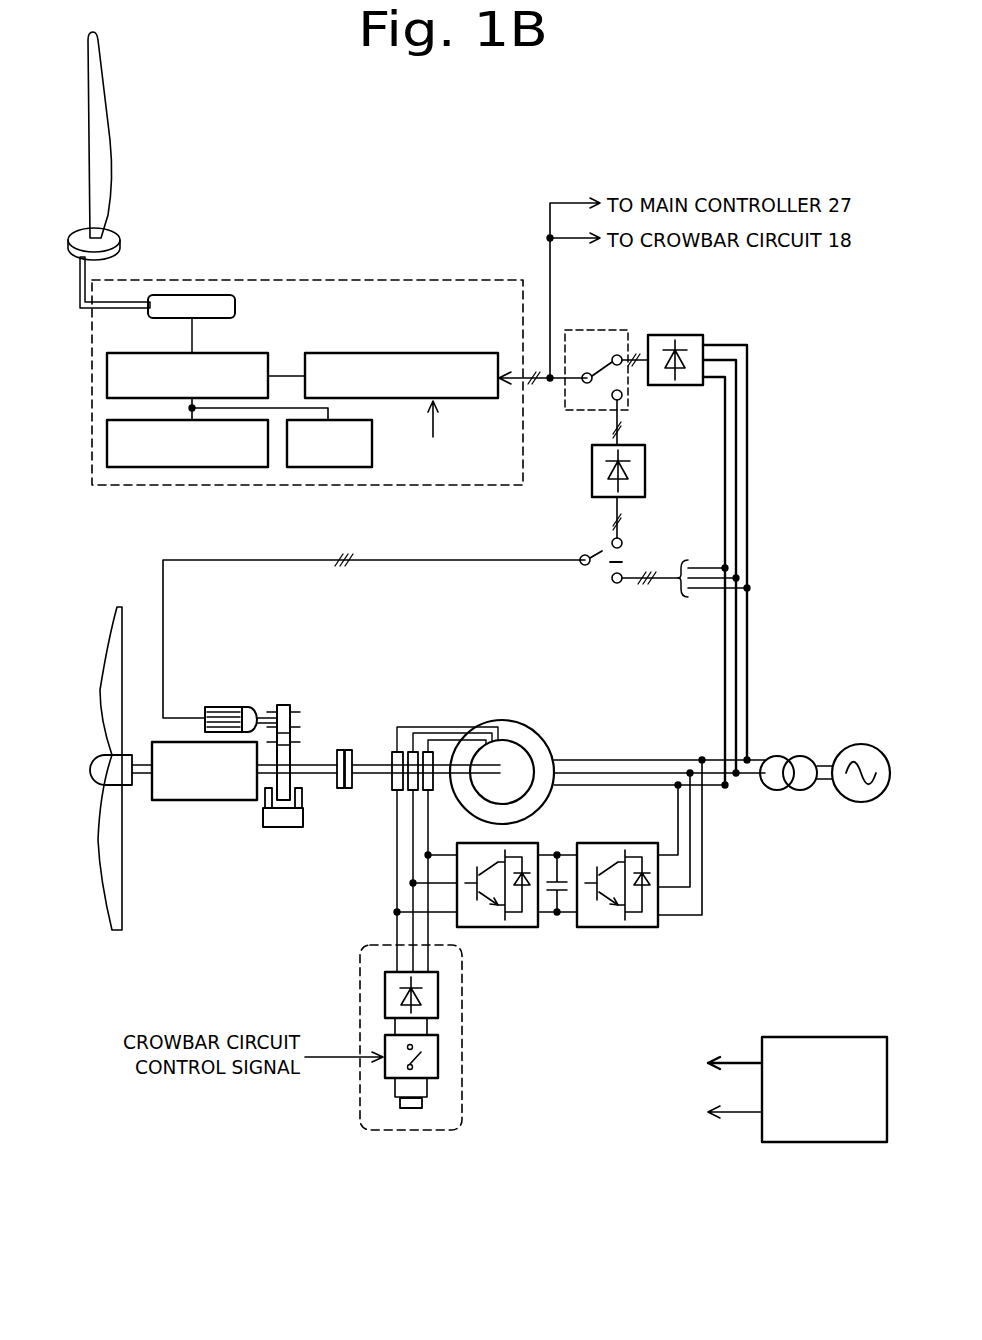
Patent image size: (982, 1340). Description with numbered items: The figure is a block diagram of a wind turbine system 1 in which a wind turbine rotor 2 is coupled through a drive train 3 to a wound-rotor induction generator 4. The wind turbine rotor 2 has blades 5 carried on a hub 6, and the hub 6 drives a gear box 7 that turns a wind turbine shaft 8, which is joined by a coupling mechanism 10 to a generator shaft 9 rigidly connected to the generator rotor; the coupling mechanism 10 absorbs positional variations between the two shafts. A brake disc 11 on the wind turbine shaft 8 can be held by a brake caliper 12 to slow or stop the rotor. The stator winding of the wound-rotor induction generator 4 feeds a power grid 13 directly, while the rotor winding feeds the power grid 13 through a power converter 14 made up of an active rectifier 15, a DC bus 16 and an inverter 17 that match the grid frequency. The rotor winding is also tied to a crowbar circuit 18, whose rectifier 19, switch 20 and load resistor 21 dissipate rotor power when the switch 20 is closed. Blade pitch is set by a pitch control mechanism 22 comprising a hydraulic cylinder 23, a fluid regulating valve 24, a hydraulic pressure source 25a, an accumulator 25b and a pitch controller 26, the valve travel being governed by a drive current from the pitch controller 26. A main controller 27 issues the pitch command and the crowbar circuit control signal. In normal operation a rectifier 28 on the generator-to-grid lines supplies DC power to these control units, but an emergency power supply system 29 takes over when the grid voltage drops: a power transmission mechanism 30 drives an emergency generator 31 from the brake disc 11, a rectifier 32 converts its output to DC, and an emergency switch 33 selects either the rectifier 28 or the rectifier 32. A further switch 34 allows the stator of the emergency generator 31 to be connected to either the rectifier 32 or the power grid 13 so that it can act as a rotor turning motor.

The wind turbine system 1 is at (501, 160).
The wind turbine rotor 2 is at (100, 923).
The drive train 3 is at (198, 878).
The wound-rotor induction generator 4 is at (507, 720).
The blades 5 is at (102, 123).
The hub 6 is at (88, 775).
The gear box 7 is at (193, 800).
The wind turbine shaft 8 is at (312, 777).
The generator shaft 9 is at (370, 777).
The coupling mechanism 10 is at (342, 750).
The brake disc 11 is at (291, 755).
The brake caliper 12 is at (282, 830).
The power grid 13 is at (858, 803).
The power converter 14 is at (604, 950).
The active rectifier 15 is at (491, 927).
The DC bus 16 is at (557, 855).
The inverter 17 is at (617, 927).
The crowbar circuit 18 is at (360, 1088).
The rectifier 19 is at (438, 995).
The switch 20 is at (438, 1058).
The load resistor 21 is at (412, 1110).
The pitch control mechanism 22 is at (327, 278).
The hydraulic cylinder 23 is at (180, 293).
The fluid regulating valve 24 is at (248, 353).
The hydraulic pressure source 25a is at (318, 467).
The accumulator 25b is at (137, 468).
The pitch controller 26 is at (425, 353).
The main controller 27 is at (825, 1037).
The rectifier 28 is at (680, 335).
The emergency power supply system 29 is at (366, 567).
The power transmission mechanism 30 is at (282, 705).
The emergency generator 31 is at (226, 707).
The rectifier 32 is at (645, 467).
The emergency switch 33 is at (596, 330).
The switch 34 is at (597, 553).